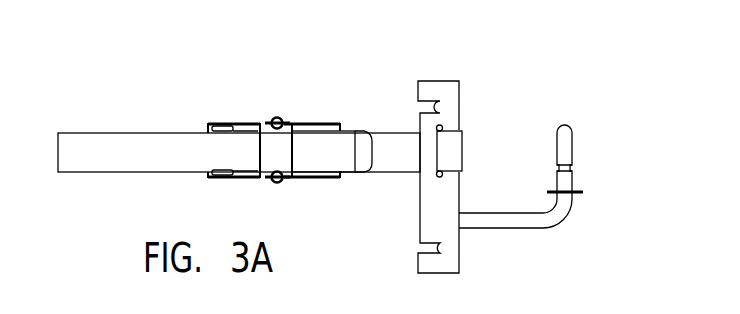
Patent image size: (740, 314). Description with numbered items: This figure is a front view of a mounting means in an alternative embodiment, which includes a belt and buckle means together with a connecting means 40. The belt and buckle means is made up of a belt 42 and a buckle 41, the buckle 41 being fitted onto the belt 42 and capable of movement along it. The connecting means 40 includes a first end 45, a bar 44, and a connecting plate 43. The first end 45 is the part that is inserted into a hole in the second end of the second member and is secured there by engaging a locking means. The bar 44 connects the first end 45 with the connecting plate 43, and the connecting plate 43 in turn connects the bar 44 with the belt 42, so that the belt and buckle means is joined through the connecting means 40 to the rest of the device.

The connecting means 40 is at (528, 254).
The buckle 41 is at (255, 100).
The belt 42 is at (93, 132).
The connecting plate 43 is at (435, 212).
The bar 44 is at (508, 222).
The first end 45 is at (568, 140).